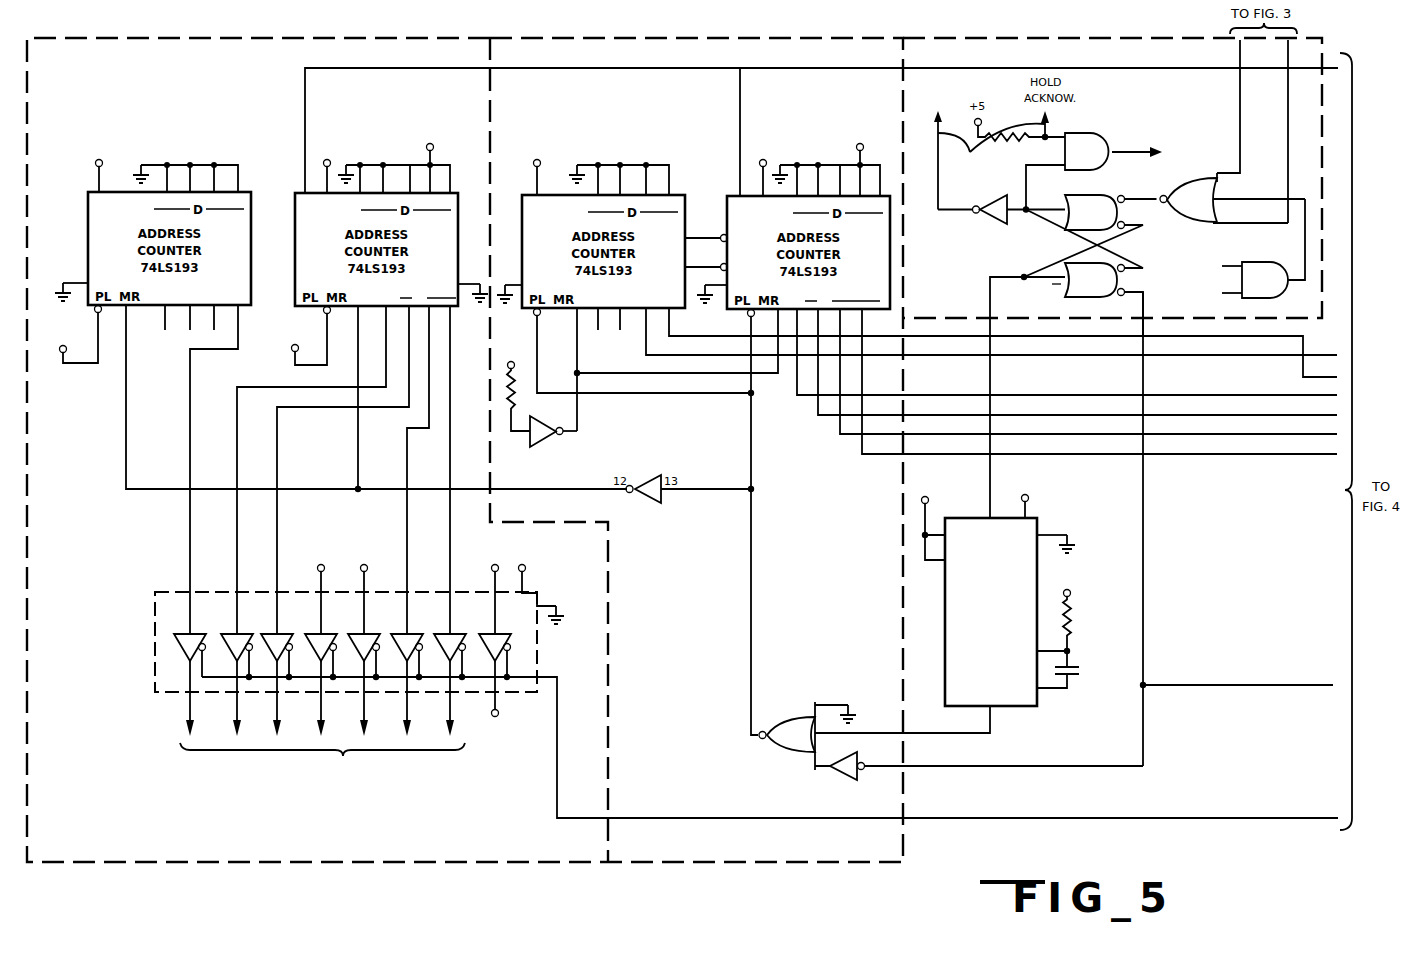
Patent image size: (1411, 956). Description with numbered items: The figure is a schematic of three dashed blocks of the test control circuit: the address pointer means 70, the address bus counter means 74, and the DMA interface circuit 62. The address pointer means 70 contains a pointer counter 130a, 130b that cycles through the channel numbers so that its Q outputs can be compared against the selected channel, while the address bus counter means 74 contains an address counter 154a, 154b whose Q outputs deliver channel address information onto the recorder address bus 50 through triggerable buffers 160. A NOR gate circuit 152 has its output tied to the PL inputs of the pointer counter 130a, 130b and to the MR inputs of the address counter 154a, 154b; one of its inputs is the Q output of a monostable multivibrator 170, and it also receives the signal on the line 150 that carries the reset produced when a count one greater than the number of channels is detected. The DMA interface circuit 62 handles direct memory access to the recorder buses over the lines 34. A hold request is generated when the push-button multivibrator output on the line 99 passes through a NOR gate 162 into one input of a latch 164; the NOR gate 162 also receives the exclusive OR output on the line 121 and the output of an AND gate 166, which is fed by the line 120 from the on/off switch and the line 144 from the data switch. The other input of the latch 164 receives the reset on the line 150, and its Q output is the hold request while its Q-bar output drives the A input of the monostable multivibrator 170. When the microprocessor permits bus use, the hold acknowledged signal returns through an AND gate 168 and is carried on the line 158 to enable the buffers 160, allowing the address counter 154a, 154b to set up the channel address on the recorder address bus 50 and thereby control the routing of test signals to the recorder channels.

The address bus counter means 74 is at (326, 36).
The address pointer means 70 is at (759, 36).
The DMA interface circuit 62 is at (1089, 36).
The address counter 154a is at (123, 200).
The address counter 154b is at (297, 200).
The pointer counter 130a is at (558, 202).
The pointer counter 130b is at (733, 198).
The triggerable buffers 160 is at (395, 584).
The recorder address bus 50 is at (322, 721).
The monostable multivibrator 170 is at (962, 518).
The NOR gate circuit 152 is at (789, 717).
The line 158 is at (676, 818).
The line 150 is at (1143, 377).
The lines 34 is at (983, 152).
The AND gate 168 is at (1088, 135).
The latch 164 is at (1130, 247).
The NOR gate 162 is at (1195, 187).
The AND gate 166 is at (1257, 268).
The line 144 is at (1216, 270).
The line 120 is at (1216, 297).
The line 99 is at (1238, 88).
The line 121 is at (1287, 88).